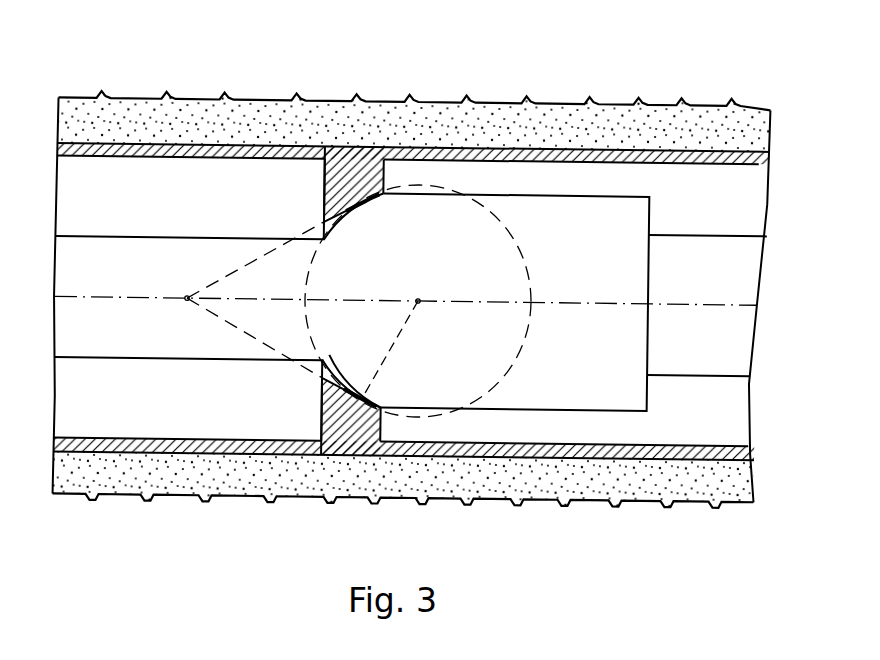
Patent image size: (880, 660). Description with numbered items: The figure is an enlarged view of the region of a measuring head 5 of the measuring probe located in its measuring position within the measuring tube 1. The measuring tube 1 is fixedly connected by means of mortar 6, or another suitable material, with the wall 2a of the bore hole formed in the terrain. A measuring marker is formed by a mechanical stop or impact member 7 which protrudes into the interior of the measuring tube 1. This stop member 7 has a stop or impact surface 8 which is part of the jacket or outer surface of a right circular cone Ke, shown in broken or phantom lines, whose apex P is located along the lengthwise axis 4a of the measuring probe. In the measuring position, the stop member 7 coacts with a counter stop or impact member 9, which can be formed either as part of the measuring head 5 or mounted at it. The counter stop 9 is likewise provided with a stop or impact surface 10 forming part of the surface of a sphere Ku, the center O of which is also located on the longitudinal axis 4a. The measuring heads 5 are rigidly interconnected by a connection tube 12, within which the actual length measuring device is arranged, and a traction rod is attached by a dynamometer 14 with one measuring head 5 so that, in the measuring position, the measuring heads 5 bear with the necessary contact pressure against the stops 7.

The measuring tube 1 is at (456, 458).
The wall of the bore hole 2a is at (180, 500).
The lengthwise axis of the measuring probe 4a is at (671, 301).
The measuring head 5 is at (650, 207).
The mortar 6 is at (596, 482).
The stop or impact member 7 is at (345, 421).
The stop or impact surface 8 is at (337, 209).
The counter stop or impact member 9 is at (425, 398).
The stop or impact surface of the counter stop 10 is at (359, 197).
The connection tube 12 is at (739, 239).
The dynamometer 14 is at (129, 251).
The right circular cone Ke is at (257, 252).
The sphere Ku is at (517, 239).
The center of the sphere O is at (398, 331).
The apex of the cone P is at (181, 314).